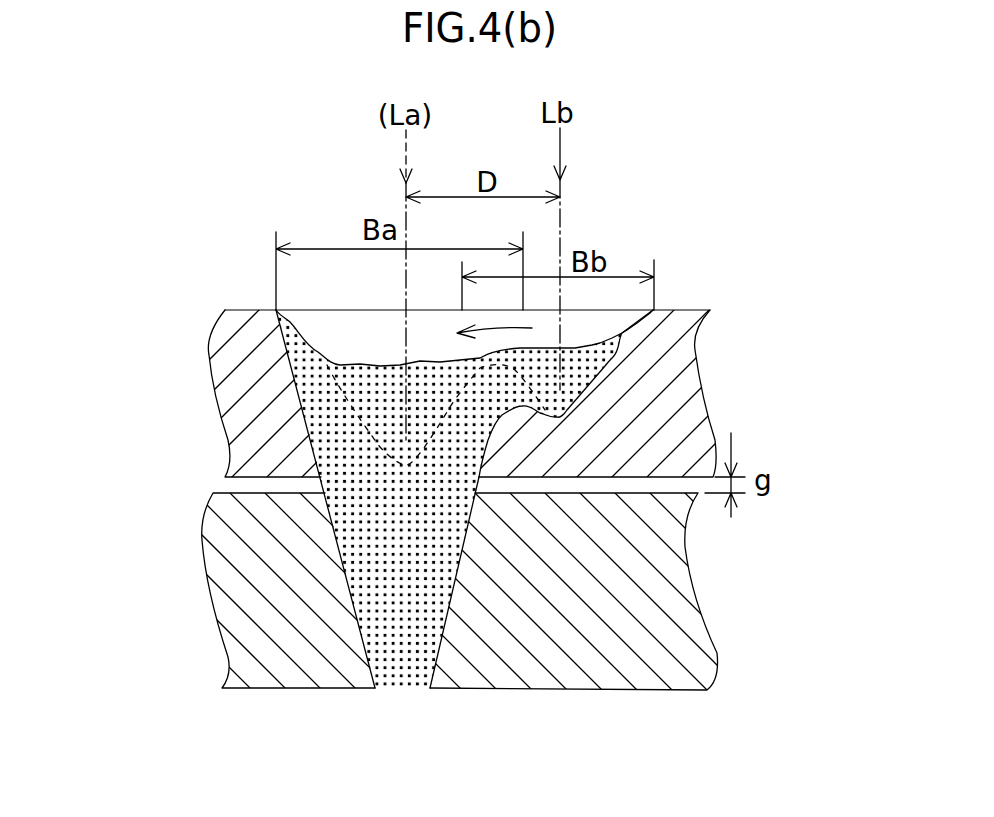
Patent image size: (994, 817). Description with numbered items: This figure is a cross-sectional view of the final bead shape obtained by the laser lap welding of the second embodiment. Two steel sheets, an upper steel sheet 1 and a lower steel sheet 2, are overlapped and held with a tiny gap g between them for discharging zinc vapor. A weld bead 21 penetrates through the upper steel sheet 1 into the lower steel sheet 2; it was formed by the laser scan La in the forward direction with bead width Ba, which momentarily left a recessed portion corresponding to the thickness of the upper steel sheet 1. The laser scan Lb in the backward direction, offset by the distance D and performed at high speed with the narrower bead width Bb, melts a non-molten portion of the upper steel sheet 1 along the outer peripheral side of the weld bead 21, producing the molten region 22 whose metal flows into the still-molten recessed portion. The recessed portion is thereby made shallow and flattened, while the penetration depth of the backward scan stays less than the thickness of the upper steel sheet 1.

The upper steel sheet 1 is at (230, 392).
The lower steel sheet 2 is at (232, 607).
The weld bead 21 is at (403, 667).
The molten region formed by second laser beam 22 is at (605, 368).